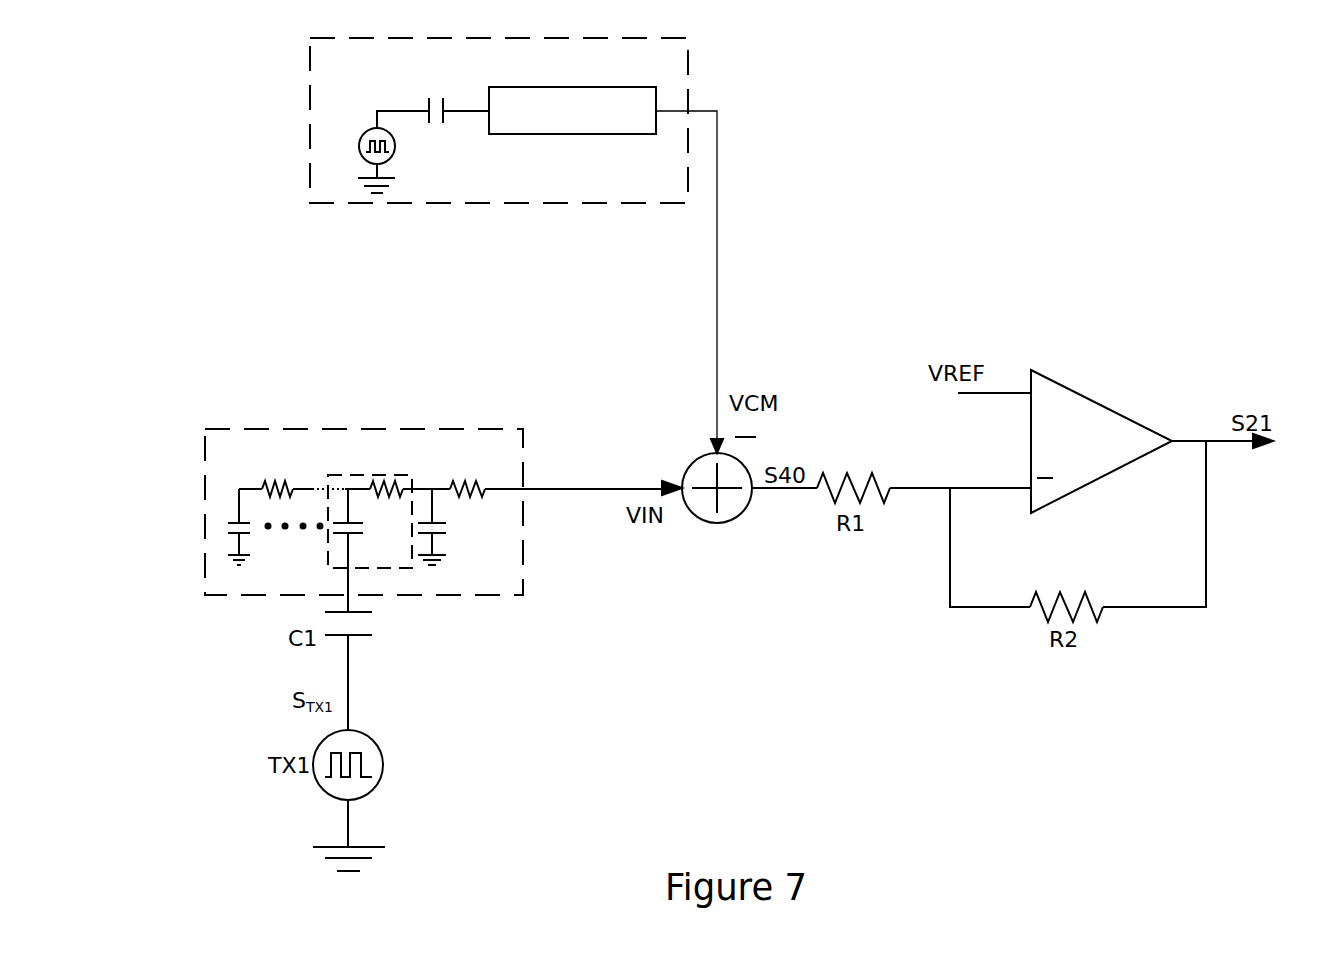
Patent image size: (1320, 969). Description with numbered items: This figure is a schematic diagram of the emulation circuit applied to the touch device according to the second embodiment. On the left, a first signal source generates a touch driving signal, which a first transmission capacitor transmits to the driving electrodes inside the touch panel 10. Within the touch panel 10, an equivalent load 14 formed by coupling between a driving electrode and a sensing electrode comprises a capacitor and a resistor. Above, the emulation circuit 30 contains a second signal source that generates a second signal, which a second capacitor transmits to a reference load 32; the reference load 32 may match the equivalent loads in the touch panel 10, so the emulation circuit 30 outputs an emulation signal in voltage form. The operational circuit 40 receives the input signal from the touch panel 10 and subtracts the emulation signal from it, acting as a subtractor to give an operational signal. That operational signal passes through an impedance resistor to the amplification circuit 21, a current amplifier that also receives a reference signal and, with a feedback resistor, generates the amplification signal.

The touch panel 10 is at (357, 483).
The equivalent load 14 is at (385, 475).
The amplification circuit 21 is at (1144, 425).
The emulation circuit 30 is at (446, 120).
The reference load 32 is at (622, 87).
The operational circuit 40 is at (702, 523).